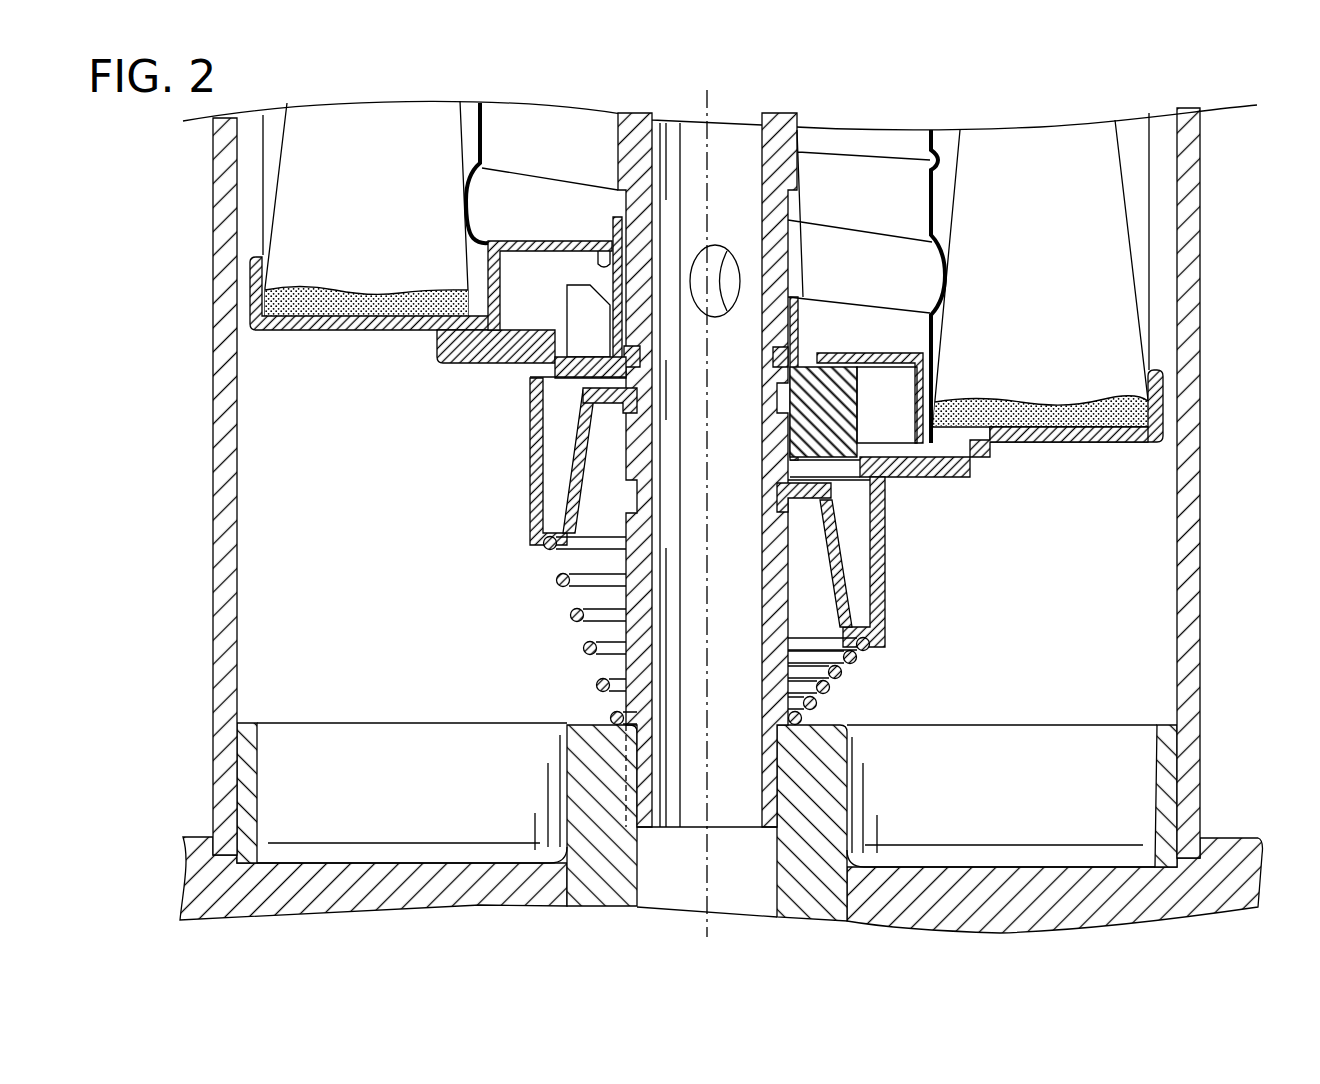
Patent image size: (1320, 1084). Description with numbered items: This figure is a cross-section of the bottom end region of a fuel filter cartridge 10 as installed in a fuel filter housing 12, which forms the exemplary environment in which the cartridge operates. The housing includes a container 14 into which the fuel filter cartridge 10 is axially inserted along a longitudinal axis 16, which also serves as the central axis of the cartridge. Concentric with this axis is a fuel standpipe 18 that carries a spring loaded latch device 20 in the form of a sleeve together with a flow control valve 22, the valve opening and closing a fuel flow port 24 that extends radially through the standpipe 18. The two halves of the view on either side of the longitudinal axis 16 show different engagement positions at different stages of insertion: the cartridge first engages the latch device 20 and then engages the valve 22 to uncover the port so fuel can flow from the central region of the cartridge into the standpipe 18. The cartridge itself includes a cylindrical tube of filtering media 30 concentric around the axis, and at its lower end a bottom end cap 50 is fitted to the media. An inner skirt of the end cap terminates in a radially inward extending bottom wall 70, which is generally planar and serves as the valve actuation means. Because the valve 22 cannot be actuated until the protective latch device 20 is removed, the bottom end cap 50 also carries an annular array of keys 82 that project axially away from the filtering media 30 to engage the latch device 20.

The fuel filter cartridge 10 is at (1157, 298).
The fuel filter housing 12 is at (1203, 360).
The container 14 is at (1202, 586).
The longitudinal axis 16 is at (704, 925).
The fuel standpipe 18 is at (632, 598).
The spring loaded latch device 20 is at (530, 500).
The flow control valve 22 is at (600, 266).
The fuel flow port 24 is at (727, 268).
The filtering media 30 is at (363, 135).
The bottom end cap 50 is at (307, 331).
The bottom wall 70 is at (874, 350).
The keys 82 is at (887, 453).